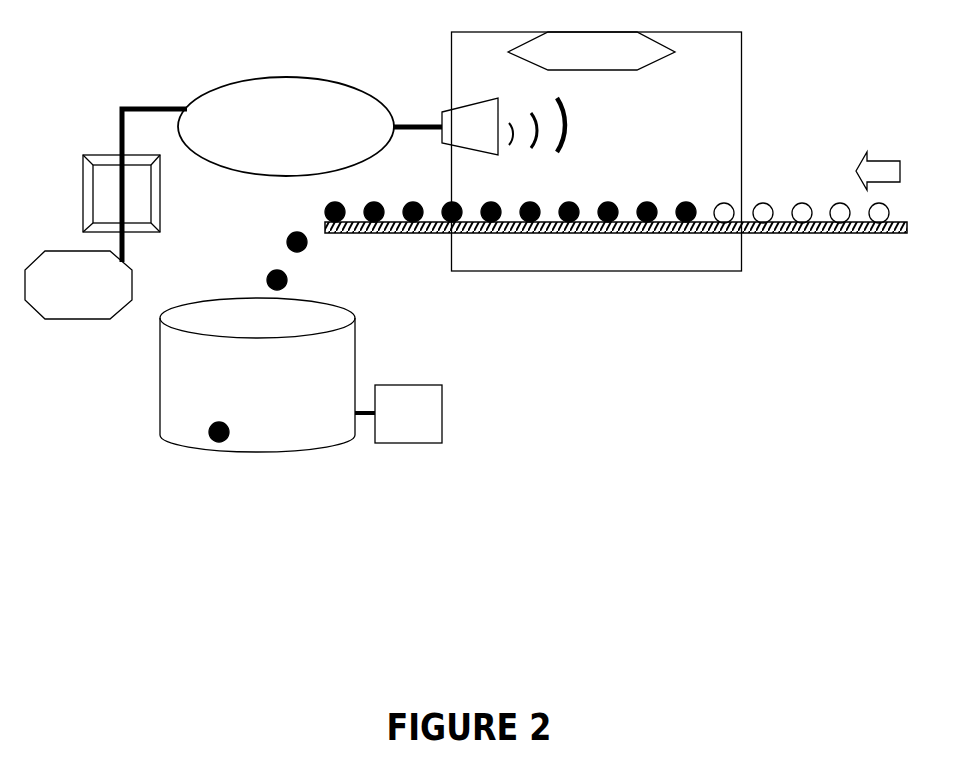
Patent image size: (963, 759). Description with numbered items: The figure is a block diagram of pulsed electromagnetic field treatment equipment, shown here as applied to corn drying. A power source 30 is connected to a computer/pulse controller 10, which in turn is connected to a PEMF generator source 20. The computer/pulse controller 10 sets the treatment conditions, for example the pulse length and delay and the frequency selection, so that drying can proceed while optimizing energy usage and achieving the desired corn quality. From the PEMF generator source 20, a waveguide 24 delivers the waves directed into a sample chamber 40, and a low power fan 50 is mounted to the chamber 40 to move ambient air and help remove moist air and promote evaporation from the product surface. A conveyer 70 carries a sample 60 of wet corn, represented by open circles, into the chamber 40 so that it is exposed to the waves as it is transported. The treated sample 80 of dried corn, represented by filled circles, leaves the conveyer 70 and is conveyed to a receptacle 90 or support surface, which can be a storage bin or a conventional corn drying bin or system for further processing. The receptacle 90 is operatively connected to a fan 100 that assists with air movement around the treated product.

The computer/pulse controller 10 is at (121, 193).
The PEMF generator source 20 is at (286, 126).
The waveguide 24 is at (503, 126).
The power source 30 is at (78, 285).
The sample chamber 40 is at (448, 73).
The low power fan 50 is at (591, 51).
The sample 60 is at (802, 196).
The conveyer 70 is at (753, 233).
The treated sample 80 is at (285, 232).
The receptacle 90 is at (257, 375).
The fan 100 is at (398, 414).